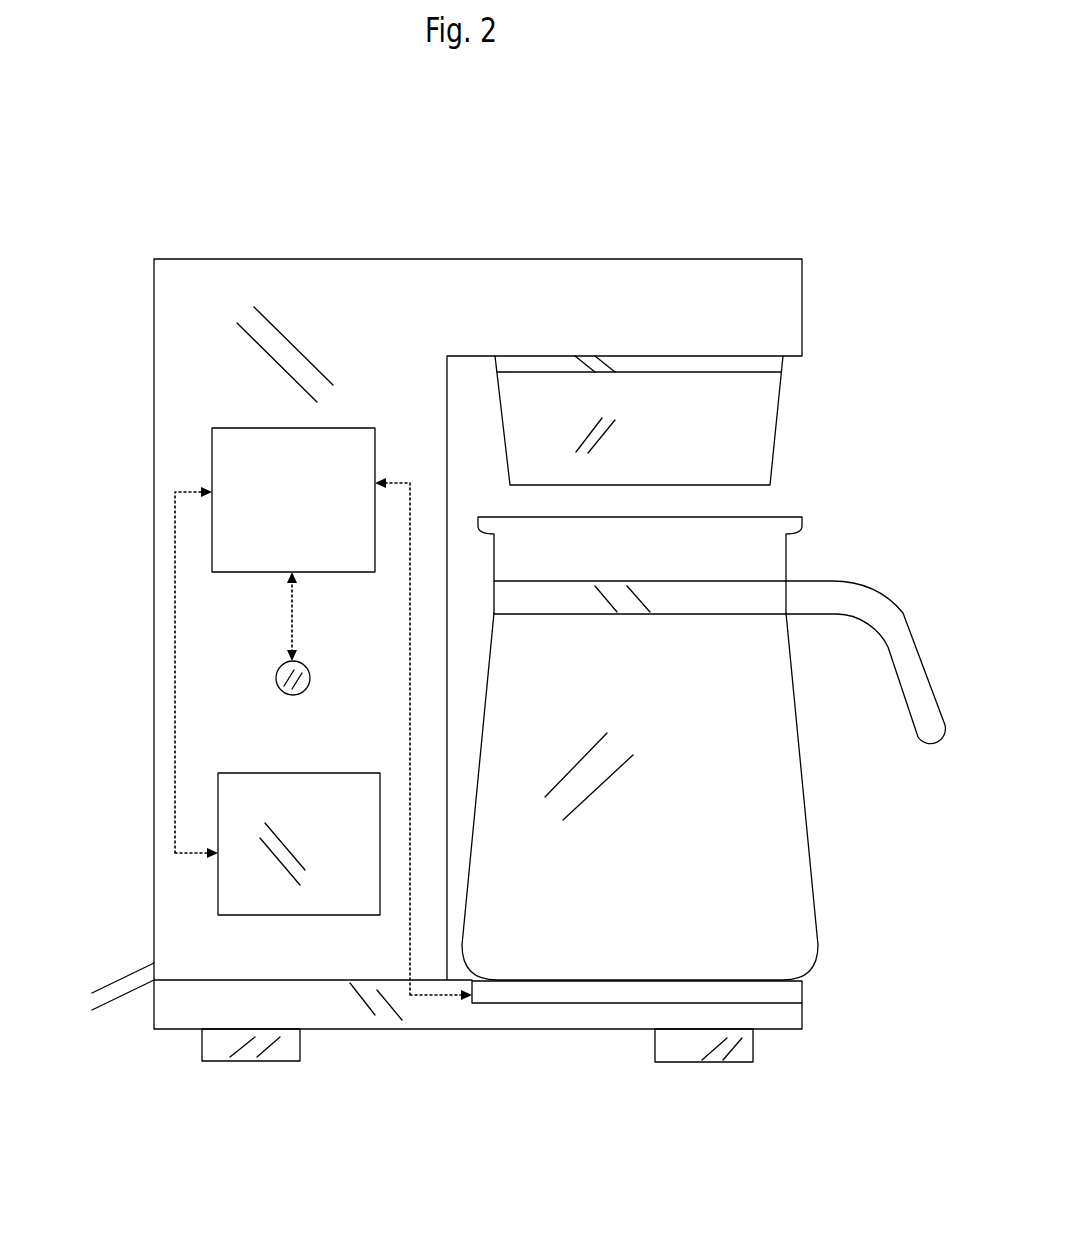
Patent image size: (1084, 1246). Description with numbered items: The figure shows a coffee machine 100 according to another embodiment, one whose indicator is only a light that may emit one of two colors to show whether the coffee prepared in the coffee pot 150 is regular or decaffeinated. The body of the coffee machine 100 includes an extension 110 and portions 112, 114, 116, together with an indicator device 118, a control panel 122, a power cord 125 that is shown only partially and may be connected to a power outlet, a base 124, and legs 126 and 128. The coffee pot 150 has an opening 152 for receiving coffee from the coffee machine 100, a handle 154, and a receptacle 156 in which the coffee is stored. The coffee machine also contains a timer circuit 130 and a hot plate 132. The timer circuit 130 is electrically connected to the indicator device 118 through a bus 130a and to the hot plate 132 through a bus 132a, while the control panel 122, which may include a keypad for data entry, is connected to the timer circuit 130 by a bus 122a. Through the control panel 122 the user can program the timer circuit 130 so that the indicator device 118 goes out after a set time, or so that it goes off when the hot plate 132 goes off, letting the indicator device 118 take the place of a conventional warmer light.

The coffee machine 100 is at (668, 236).
The extension 110 is at (595, 307).
The portion 112 is at (748, 438).
The portion 114 is at (772, 367).
The portion 116 is at (241, 465).
The indicator device 118 is at (283, 667).
The control panel 122 is at (232, 852).
The bus 122a is at (175, 683).
The base 124 is at (757, 1022).
The power cord 125 is at (120, 988).
The leg 126 is at (290, 1045).
The leg 128 is at (675, 1050).
The timer circuit 130 is at (320, 442).
The bus 130a is at (293, 615).
The hot plate 132 is at (788, 995).
The bus 132a is at (410, 667).
The coffee pot 150 is at (712, 728).
The opening 152 is at (777, 515).
The handle 154 is at (893, 635).
The receptacle 156 is at (748, 762).